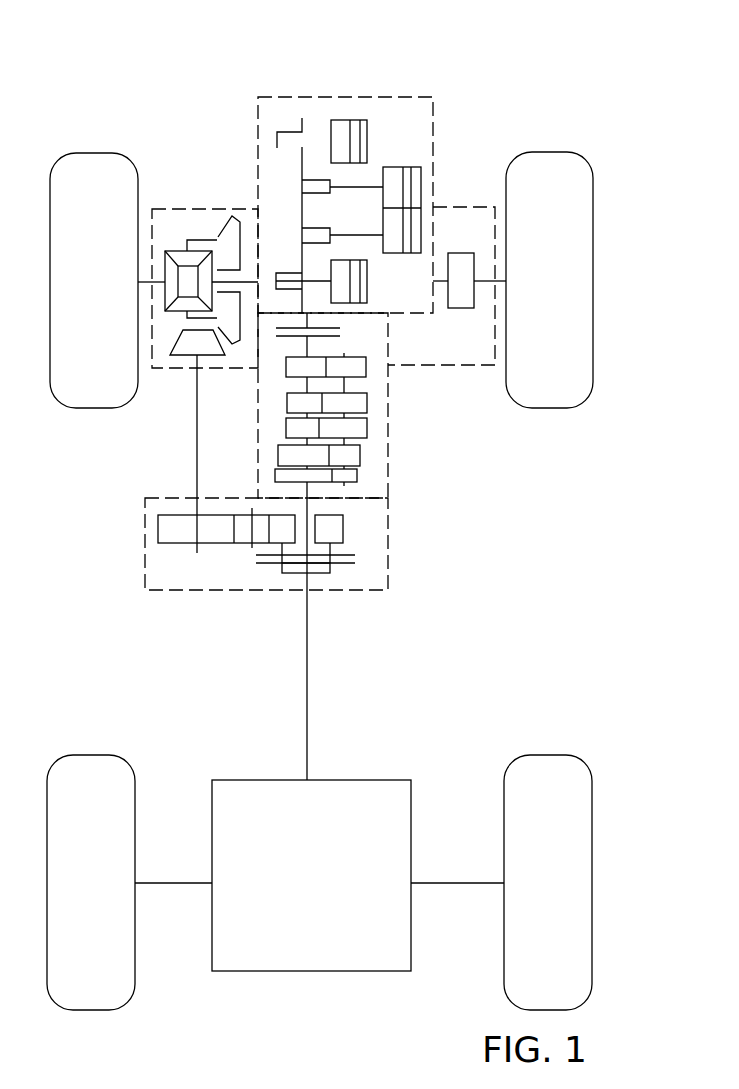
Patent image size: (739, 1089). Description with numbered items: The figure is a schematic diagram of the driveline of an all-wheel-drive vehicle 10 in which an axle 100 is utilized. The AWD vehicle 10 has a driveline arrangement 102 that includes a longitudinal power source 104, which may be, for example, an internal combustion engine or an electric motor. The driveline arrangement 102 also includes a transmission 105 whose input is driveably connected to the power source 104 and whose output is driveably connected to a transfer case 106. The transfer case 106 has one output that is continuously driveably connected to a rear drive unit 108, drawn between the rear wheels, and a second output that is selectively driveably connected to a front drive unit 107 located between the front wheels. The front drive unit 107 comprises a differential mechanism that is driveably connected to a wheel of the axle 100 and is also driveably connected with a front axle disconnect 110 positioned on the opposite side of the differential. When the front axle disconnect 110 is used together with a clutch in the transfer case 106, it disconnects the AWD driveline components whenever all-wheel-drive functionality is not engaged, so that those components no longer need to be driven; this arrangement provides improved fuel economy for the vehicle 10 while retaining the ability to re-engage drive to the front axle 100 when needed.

The AWD vehicle 10 is at (534, 86).
The axle 100 is at (230, 99).
The driveline arrangement 102 is at (416, 594).
The longitudinal power source 104 is at (405, 113).
The transmission 105 is at (378, 483).
The transfer case 106 is at (378, 533).
The front drive unit 107 is at (193, 222).
The rear drive unit 108 is at (295, 973).
The front axle disconnect 110 is at (457, 218).